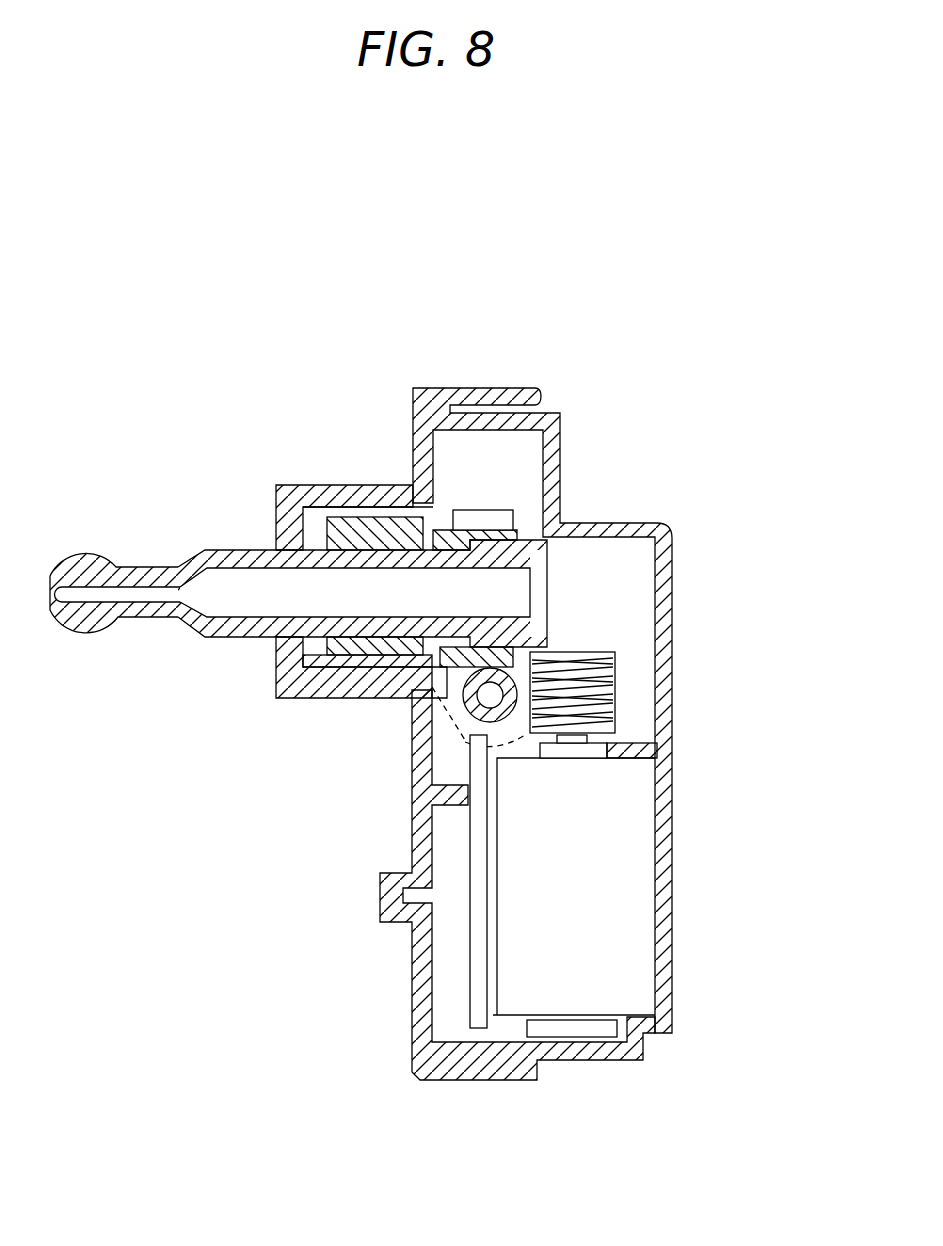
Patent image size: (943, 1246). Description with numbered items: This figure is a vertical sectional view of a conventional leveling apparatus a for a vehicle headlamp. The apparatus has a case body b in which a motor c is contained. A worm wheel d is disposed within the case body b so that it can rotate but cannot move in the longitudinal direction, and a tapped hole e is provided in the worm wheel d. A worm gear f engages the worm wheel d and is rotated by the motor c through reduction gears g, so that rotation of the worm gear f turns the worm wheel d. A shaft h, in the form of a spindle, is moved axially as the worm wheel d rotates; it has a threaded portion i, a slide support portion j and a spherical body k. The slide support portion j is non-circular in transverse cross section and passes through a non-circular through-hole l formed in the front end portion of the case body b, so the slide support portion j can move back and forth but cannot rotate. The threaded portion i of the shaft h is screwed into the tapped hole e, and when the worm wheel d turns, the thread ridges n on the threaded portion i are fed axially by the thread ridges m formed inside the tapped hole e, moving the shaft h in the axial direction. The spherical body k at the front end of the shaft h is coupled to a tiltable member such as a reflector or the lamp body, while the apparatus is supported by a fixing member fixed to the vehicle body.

The leveling apparatus a is at (485, 303).
The case body b is at (565, 468).
The motor c is at (630, 932).
The worm wheel d is at (393, 537).
The tapped hole e is at (466, 563).
The worm gear f is at (465, 730).
The reduction gears g is at (607, 697).
The shaft h is at (245, 633).
The threaded portion i is at (292, 610).
The slide support portion j is at (288, 535).
The spherical body k is at (82, 555).
The non-circular through-hole l is at (270, 630).
The thread ridges m is at (376, 700).
The thread ridges n is at (452, 522).